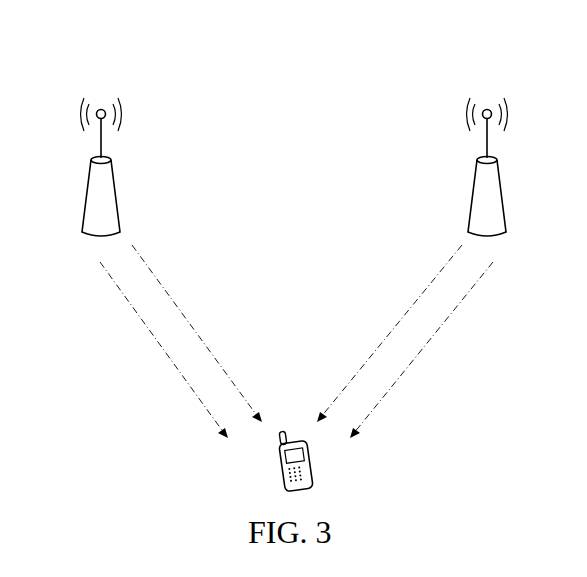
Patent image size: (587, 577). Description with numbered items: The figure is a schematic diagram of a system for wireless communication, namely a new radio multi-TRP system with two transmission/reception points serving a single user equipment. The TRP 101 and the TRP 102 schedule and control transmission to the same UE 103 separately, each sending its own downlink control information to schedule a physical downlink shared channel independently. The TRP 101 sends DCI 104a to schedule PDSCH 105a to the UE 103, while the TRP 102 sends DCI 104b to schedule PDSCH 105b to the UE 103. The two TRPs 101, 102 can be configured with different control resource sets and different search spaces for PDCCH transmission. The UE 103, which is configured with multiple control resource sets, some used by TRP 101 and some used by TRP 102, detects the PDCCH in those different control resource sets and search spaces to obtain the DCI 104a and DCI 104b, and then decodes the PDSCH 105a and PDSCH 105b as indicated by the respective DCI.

The TRP 101 is at (107, 80).
The TRP 102 is at (468, 87).
The UE 103 is at (313, 462).
The DCI 104a is at (172, 360).
The PDSCH 105a is at (215, 357).
The DCI 104b is at (418, 360).
The PDSCH 105b is at (388, 333).